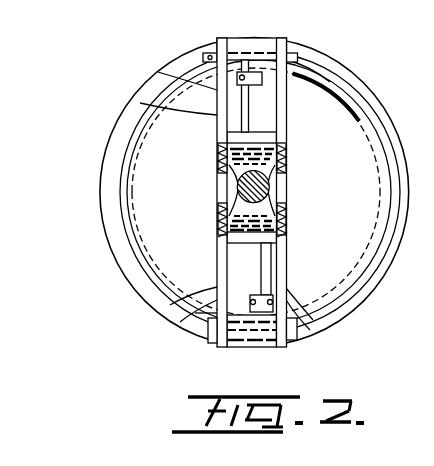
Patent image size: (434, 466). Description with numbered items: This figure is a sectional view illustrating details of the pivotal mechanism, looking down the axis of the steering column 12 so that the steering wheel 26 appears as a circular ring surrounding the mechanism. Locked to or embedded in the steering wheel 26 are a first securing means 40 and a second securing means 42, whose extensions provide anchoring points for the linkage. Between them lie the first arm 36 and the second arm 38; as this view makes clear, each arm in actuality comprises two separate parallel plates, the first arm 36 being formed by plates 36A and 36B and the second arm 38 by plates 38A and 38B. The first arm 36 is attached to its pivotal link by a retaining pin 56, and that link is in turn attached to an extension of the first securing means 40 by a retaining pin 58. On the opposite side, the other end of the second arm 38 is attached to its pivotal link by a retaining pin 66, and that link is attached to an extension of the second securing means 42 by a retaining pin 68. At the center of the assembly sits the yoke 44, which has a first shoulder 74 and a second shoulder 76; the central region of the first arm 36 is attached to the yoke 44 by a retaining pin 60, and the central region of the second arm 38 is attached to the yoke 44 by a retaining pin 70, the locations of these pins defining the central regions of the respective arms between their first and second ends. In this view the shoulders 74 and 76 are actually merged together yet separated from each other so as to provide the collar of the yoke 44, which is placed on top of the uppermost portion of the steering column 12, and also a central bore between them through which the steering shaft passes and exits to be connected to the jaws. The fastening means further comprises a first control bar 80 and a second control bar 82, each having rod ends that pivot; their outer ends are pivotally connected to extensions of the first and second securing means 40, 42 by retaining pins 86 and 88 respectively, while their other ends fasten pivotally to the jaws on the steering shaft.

The steering column 12 is at (270, 187).
The steering wheel 26 is at (100, 193).
The first arm 36 is at (188, 245).
The parallel plate of first arm 36A is at (217, 286).
The parallel plate of first arm 36B is at (310, 320).
The second arm 38 is at (176, 150).
The parallel plate of second arm 38A is at (160, 72).
The parallel plate of second arm 38B is at (287, 100).
The first securing means 40 is at (288, 345).
The second securing means 42 is at (287, 98).
The yoke 44 is at (195, 201).
The retaining pin 56 is at (208, 340).
The retaining pin 58 is at (228, 347).
The retaining pin 60 is at (288, 240).
The retaining pin 66 is at (205, 54).
The retaining pin 68 is at (217, 42).
The retaining pin 70 is at (214, 140).
The first shoulder 74 is at (288, 207).
The second shoulder 76 is at (287, 167).
The first control bar 80 is at (271, 271).
The second control bar 82 is at (140, 103).
The retaining pin 86 is at (254, 342).
The retaining pin 88 is at (255, 90).